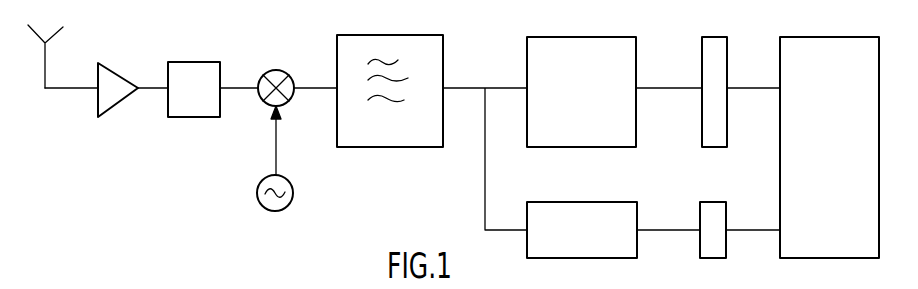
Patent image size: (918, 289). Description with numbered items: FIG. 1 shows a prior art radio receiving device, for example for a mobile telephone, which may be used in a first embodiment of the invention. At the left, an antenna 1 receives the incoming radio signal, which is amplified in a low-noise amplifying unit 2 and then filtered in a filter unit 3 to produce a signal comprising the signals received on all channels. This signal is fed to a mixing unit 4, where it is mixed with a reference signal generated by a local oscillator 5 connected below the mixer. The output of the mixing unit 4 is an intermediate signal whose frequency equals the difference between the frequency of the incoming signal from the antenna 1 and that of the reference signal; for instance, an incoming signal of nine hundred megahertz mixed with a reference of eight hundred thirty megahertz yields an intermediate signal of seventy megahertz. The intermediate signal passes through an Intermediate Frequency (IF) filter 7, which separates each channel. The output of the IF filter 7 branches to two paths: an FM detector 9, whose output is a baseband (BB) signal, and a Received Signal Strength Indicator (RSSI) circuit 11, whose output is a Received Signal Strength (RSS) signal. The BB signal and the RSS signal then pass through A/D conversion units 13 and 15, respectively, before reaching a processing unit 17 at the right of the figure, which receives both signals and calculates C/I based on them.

The antenna 1 is at (47, 47).
The low-noise amplifying unit 2 is at (113, 68).
The filter unit 3 is at (203, 102).
The mixing unit 4 is at (281, 72).
The local oscillator 5 is at (300, 185).
The Intermediate Frequency (IF) filter 7 is at (432, 131).
The FM detector 9 is at (608, 132).
The Received Signal Strength Indicator (RSSI) circuit 11 is at (608, 243).
The A/D conversion unit 13 is at (734, 113).
The A/D conversion unit 15 is at (737, 204).
The processing unit 17 is at (862, 224).